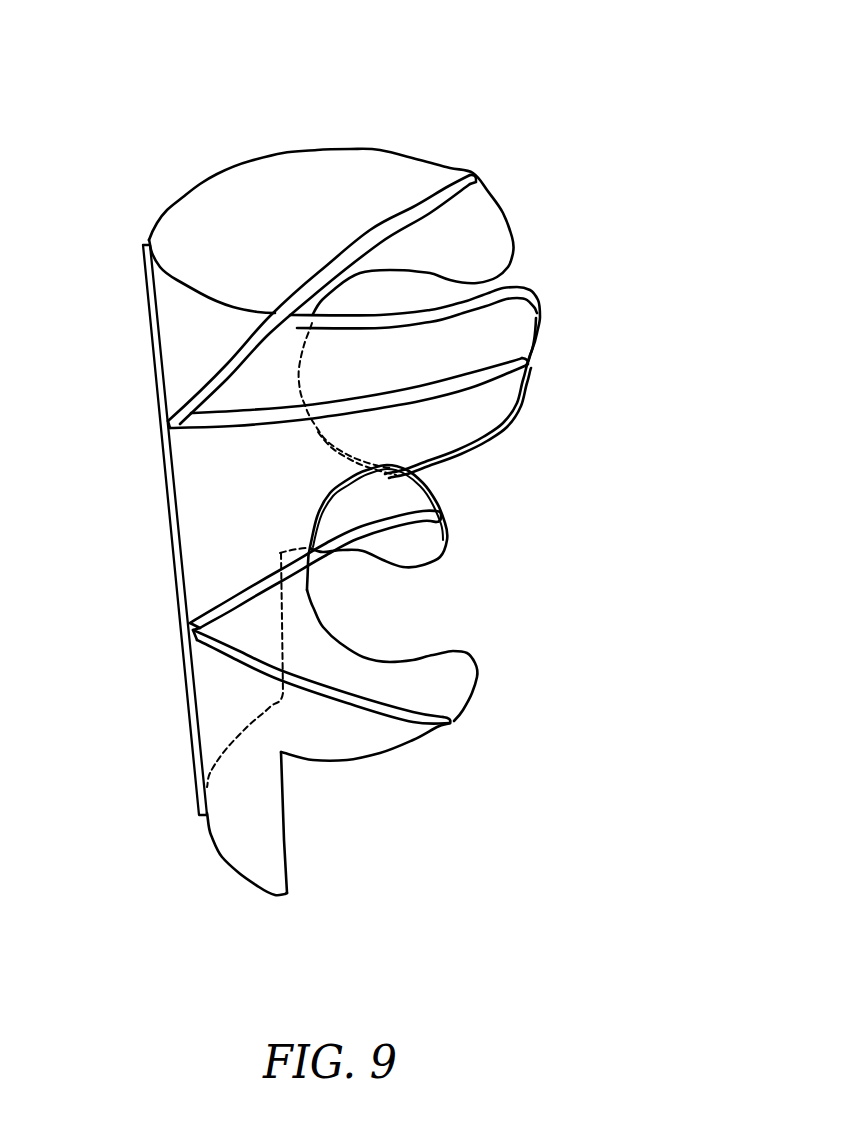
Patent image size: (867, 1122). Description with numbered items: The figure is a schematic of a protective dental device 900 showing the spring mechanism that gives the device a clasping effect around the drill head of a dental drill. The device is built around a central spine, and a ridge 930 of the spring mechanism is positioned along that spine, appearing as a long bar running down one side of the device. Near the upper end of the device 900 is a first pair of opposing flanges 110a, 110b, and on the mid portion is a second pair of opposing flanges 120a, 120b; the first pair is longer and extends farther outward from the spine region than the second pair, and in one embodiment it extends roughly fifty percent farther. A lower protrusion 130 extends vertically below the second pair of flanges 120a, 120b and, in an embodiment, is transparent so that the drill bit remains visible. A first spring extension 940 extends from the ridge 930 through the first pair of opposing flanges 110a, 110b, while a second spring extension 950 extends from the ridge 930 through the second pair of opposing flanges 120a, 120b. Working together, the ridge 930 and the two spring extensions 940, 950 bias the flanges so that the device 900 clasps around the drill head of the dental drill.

The protective dental device 900 is at (357, 97).
The first opposing flange 110a is at (488, 257).
The first opposing flange 110b is at (518, 323).
The second opposing flange 120a is at (390, 497).
The second opposing flange 120b is at (417, 728).
The lower protrusion 130 is at (270, 863).
The ridge 930 is at (172, 555).
The first spring extension 940 is at (247, 360).
The second spring extension 950 is at (270, 668).